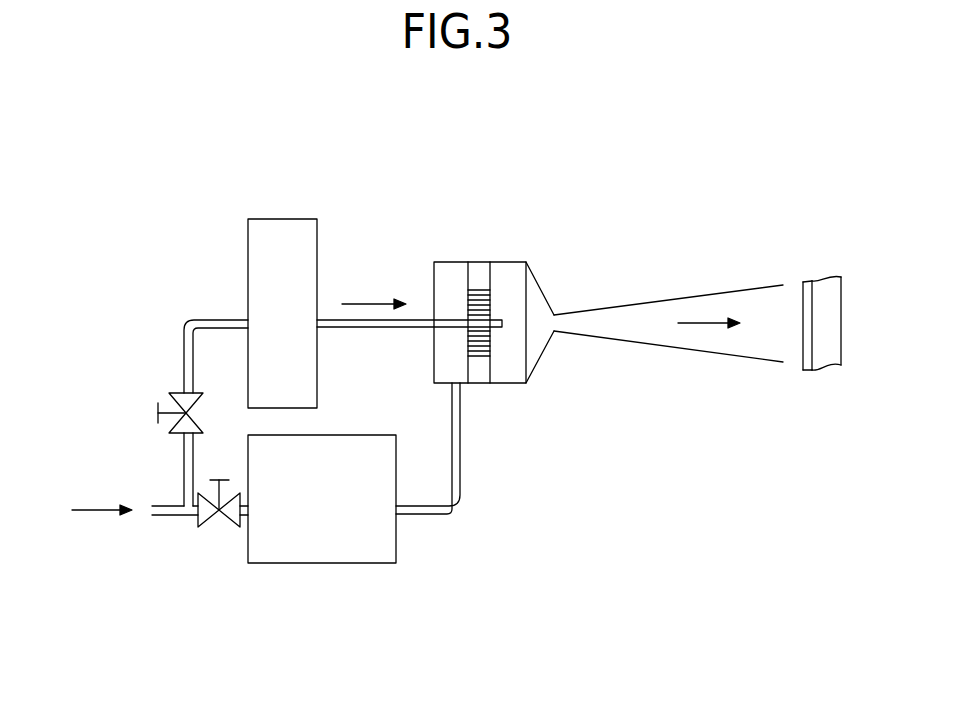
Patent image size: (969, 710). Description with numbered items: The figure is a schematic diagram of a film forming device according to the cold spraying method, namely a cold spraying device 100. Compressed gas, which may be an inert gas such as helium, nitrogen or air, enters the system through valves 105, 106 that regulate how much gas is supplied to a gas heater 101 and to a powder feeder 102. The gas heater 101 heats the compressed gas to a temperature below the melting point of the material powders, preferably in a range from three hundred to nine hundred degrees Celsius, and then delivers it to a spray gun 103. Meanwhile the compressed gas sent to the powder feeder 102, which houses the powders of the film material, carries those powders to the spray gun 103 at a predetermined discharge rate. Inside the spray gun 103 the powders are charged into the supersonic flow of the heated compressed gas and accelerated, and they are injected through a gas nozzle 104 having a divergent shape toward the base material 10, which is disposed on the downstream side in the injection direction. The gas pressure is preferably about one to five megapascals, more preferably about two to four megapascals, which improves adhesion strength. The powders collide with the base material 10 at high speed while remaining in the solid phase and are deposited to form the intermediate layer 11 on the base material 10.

The base material 10 is at (838, 280).
The intermediate layer 11 is at (808, 280).
The cold spraying device 100 is at (630, 190).
The gas heater 101 is at (352, 564).
The powder feeder 102 is at (280, 219).
The spray gun 103 is at (510, 262).
The gas nozzle 104 is at (651, 344).
The valve 105 is at (213, 525).
The valve 106 is at (157, 406).